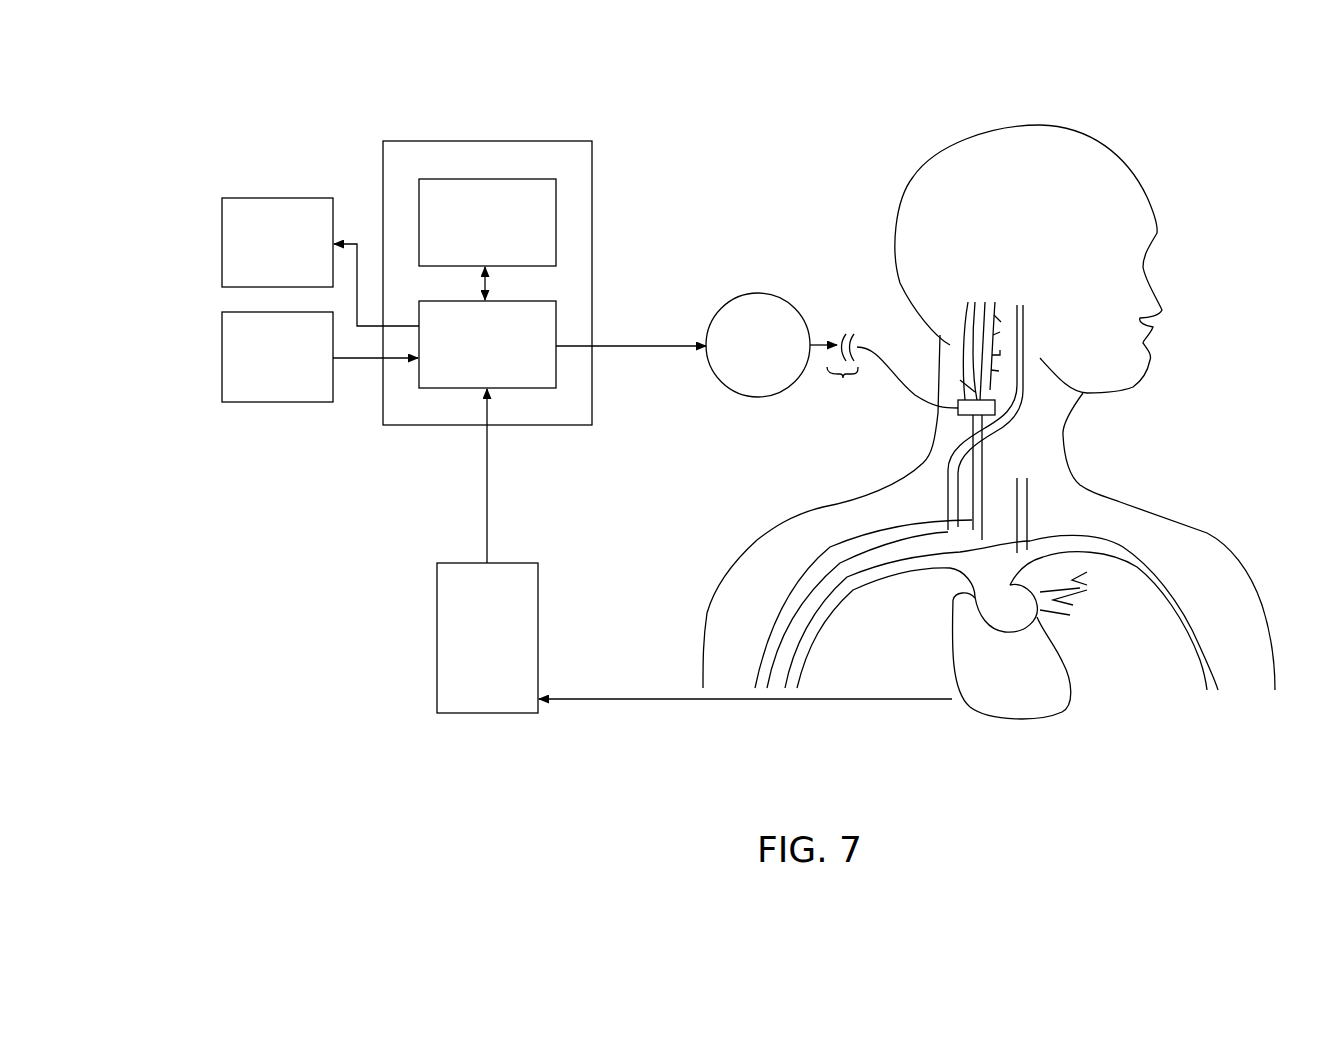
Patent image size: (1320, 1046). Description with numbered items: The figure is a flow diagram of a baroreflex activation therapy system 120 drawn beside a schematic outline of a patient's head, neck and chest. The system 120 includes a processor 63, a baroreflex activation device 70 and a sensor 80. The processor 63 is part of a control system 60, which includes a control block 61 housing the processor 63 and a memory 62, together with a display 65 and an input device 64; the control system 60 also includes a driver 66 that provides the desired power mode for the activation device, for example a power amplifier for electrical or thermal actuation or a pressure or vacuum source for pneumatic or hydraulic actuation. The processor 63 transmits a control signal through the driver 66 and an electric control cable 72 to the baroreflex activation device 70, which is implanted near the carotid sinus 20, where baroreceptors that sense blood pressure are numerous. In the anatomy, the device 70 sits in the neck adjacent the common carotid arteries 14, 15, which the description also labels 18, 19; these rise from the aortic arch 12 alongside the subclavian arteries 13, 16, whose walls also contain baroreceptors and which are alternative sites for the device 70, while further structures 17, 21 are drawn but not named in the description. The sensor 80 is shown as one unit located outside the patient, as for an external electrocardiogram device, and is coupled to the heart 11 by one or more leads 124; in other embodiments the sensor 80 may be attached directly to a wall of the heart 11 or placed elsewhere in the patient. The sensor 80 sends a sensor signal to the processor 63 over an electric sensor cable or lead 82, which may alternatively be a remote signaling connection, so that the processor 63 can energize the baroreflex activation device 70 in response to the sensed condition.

The heart 11 is at (1043, 663).
The aortic arch 12 is at (983, 608).
The subclavian artery 13 is at (780, 613).
The common carotid artery 14 is at (980, 455).
The common carotid artery 15 is at (1027, 508).
The subclavian artery 16 is at (1117, 547).
The pulmonary vessels 17 is at (1083, 563).
The common carotid artery 18 is at (965, 313).
The common carotid artery 19 is at (995, 303).
The carotid sinus 20 is at (956, 394).
The jugular vein 21 is at (1022, 330).
The control system 60 is at (625, 160).
The control block 61 is at (577, 197).
The memory 62 is at (556, 243).
The processor 63 is at (543, 370).
The input device 64 is at (327, 389).
The display 65 is at (295, 207).
The driver 66 is at (735, 372).
The baroreflex activation device 70 is at (958, 418).
The control cable 72 is at (857, 347).
The sensor 80 is at (530, 602).
The sensor lead 82 is at (489, 517).
The baroreflex activation therapy system 120 is at (637, 65).
The leads 124 is at (760, 706).